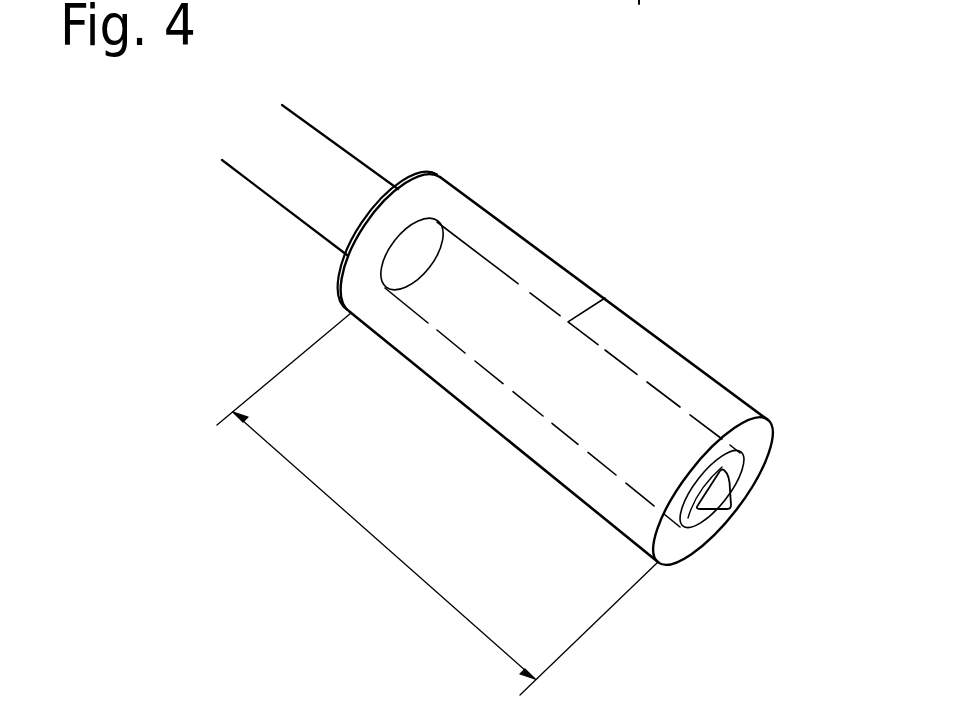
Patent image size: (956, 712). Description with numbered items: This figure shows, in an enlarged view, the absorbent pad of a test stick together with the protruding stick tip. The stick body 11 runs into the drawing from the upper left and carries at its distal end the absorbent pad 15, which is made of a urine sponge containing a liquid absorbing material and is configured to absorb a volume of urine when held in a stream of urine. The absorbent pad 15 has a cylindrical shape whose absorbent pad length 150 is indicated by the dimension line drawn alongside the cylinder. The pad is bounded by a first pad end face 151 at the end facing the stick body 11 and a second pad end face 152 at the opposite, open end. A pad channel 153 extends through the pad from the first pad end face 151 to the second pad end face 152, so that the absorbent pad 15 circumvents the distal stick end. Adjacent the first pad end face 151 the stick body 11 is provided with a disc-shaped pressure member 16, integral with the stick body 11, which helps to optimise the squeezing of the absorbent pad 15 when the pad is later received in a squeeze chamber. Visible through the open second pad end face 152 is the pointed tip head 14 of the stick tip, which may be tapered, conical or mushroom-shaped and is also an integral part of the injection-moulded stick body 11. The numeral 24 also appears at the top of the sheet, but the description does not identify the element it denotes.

The stick body 11 is at (300, 189).
The tip head 14 is at (723, 502).
The absorbent pad 15 is at (538, 404).
The pressure member 16 is at (408, 186).
The reference 24 is at (634, 18).
The absorbent pad length 150 is at (437, 504).
The first pad end face 151 is at (348, 300).
The second pad end face 152 is at (675, 547).
The pad channel 153 is at (605, 298).